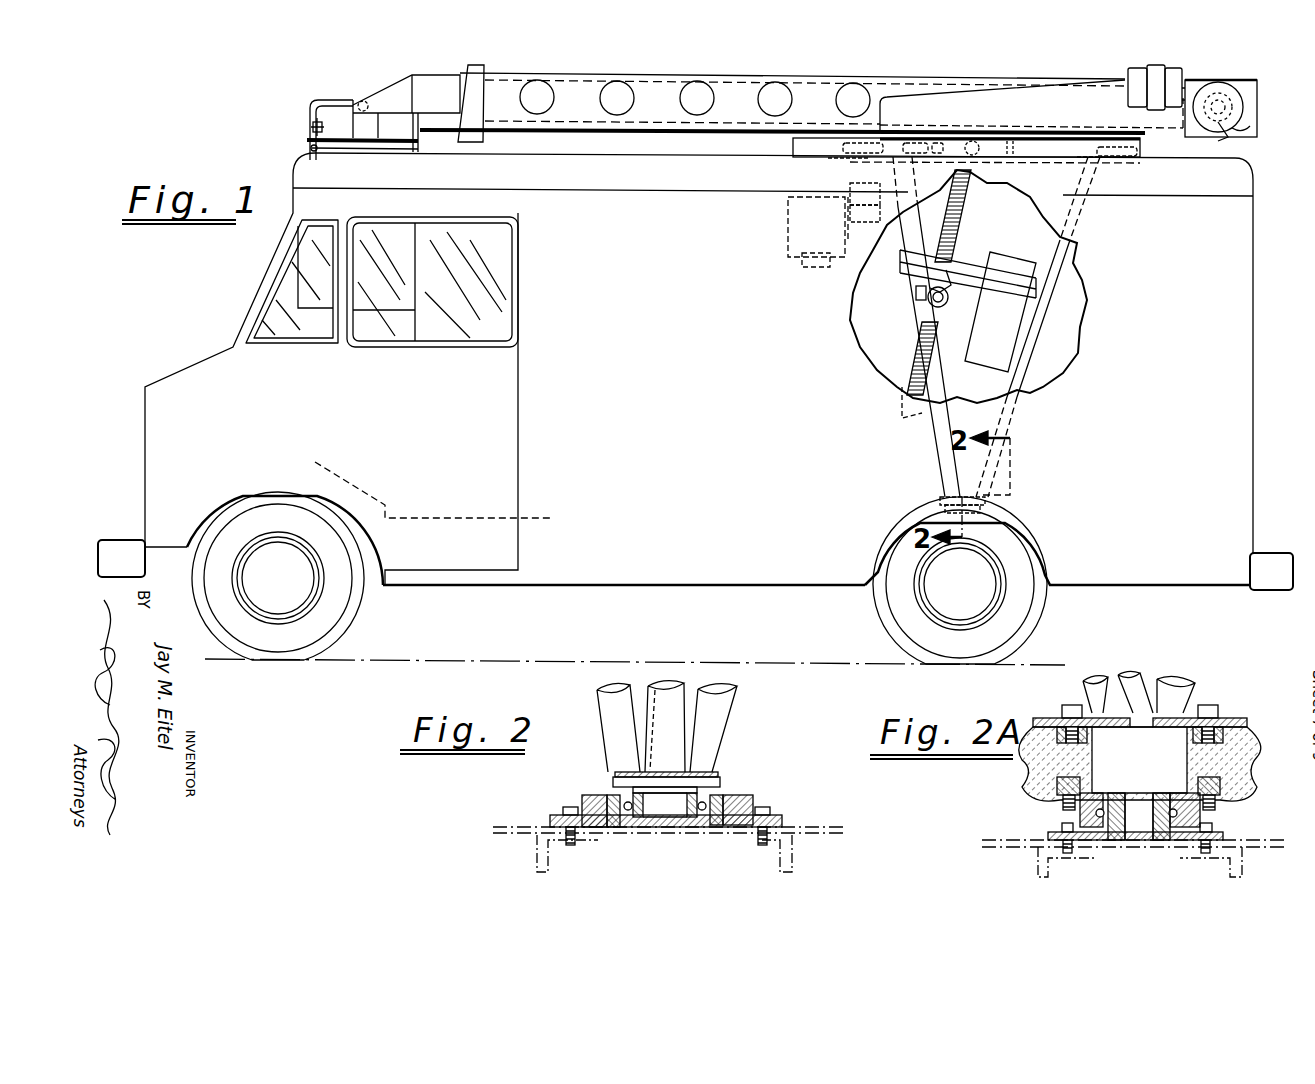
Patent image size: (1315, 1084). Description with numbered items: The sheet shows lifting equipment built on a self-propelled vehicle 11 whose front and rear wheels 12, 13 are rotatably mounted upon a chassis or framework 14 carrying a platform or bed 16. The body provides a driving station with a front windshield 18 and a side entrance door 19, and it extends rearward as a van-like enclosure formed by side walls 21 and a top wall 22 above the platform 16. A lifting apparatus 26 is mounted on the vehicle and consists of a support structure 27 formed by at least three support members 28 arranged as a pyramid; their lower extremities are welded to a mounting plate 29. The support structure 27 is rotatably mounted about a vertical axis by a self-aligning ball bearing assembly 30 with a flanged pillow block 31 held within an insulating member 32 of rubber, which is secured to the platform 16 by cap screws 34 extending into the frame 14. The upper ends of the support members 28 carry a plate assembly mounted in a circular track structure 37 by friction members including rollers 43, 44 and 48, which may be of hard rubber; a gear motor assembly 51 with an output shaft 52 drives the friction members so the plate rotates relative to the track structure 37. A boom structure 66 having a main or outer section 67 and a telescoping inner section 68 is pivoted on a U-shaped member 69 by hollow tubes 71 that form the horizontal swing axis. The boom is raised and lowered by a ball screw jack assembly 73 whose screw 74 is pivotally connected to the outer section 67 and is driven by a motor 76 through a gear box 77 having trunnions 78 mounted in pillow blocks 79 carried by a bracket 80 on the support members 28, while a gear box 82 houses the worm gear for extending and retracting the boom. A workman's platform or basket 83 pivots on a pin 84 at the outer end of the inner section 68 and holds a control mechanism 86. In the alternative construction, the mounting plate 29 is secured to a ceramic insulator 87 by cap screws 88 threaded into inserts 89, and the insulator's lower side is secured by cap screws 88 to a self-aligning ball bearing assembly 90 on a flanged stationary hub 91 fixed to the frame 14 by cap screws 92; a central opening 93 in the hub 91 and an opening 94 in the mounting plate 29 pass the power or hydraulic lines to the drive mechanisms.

In FIG. 1, the self-propelled vehicle 11 is at (176, 303).
In FIG. 1, the front wheels 12 is at (348, 620).
In FIG. 1, the rear wheels 13 is at (1028, 626).
In FIG. 2, the chassis or framework 14 is at (537, 853).
In FIG. 2, the platform or bed 16 is at (513, 826).
In FIG. 1, the front windshield 18 is at (266, 280).
In FIG. 1, the side entrance door 19 is at (520, 447).
In FIG. 1, the side walls 21 is at (1243, 272).
In FIG. 1, the top wall 22 is at (1232, 172).
In FIG. 1, the lifting apparatus 26 is at (922, 416).
In FIG. 1, the support structure 27 is at (1030, 388).
In FIG. 1, the support members 28 is at (906, 230).
In FIG. 2, the support members 28 is at (657, 703).
In FIG. 2A, the support members 28 is at (1103, 692).
In FIG. 1, the mounting plate 29 is at (940, 501).
In FIG. 2, the mounting plate 29 is at (722, 782).
In FIG. 2A, the mounting plate 29 is at (1050, 718).
In FIG. 2, the self-aligning ball bearing assembly 30 is at (690, 822).
In FIG. 1, the flanged pillow block 31 is at (985, 506).
In FIG. 2, the flanged pillow block 31 is at (756, 796).
In FIG. 2, the insulating member 32 is at (608, 794).
In FIG. 2, the cap screws 34 is at (571, 806).
In FIG. 1, the circular track structure 37 is at (1142, 149).
In FIG. 1, the roller 43 is at (866, 182).
In FIG. 1, the roller 44 is at (826, 159).
In FIG. 1, the roller 48 is at (1084, 160).
In FIG. 1, the gear motor assembly 51 is at (788, 261).
In FIG. 1, the output shaft 52 is at (884, 144).
In FIG. 1, the boom structure 66 is at (845, 68).
In FIG. 1, the main or outer boom section 67 is at (966, 80).
In FIG. 1, the telescoping or inner boom section 68 is at (515, 72).
In FIG. 1, the U-shaped member 69 is at (1245, 78).
In FIG. 1, the hollow tubes 71 is at (1246, 108).
In FIG. 1, the ball screw jack assembly 73 is at (900, 338).
In FIG. 1, the screw 74 is at (972, 222).
In FIG. 1, the motor 76 is at (1000, 348).
In FIG. 1, the gear box 77 is at (970, 272).
In FIG. 1, the trunnions 78 is at (941, 310).
In FIG. 1, the pillow blocks 79 is at (944, 282).
In FIG. 1, the bracket 80 is at (914, 293).
In FIG. 1, the gear box 82 is at (1226, 138).
In FIG. 1, the workman's platform or basket 83 is at (316, 97).
In FIG. 1, the pin 84 is at (364, 100).
In FIG. 1, the control mechanism 86 is at (306, 130).
In FIG. 2A, the ceramic insulator 87 is at (1238, 760).
In FIG. 2A, the cap screws 88 is at (1212, 708).
In FIG. 2A, the inserts 89 is at (1224, 735).
In FIG. 2A, the self-aligning ball bearing assembly 90 is at (1068, 815).
In FIG. 2A, the flanged stationary hub 91 is at (1118, 797).
In FIG. 2A, the cap screws 92 is at (1045, 832).
In FIG. 2A, the opening 93 is at (1140, 813).
In FIG. 2A, the opening 94 is at (1150, 730).